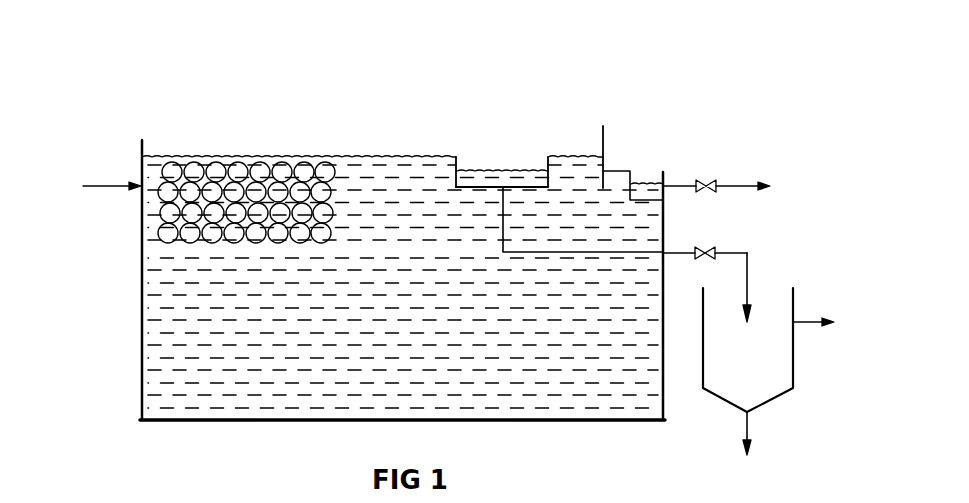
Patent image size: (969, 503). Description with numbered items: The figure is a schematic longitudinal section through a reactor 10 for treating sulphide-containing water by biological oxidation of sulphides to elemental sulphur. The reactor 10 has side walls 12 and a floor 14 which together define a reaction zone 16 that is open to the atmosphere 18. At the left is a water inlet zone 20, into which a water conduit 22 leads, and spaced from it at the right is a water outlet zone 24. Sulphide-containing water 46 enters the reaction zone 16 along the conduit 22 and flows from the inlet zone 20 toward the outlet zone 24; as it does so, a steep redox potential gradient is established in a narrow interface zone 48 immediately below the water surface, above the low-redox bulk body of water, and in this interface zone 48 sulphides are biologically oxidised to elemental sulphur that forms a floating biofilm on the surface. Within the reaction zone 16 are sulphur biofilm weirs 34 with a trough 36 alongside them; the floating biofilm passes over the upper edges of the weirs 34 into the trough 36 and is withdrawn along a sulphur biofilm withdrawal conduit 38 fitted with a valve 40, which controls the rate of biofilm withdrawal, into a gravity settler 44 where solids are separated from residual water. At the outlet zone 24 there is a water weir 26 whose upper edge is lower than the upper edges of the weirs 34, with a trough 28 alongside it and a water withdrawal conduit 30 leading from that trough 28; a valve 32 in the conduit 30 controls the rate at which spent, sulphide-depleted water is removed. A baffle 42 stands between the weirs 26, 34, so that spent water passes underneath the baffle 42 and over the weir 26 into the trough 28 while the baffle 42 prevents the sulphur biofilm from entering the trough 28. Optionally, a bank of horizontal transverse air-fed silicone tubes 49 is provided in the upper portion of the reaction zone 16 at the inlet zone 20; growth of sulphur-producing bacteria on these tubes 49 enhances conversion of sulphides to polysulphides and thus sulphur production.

The reactor 10 is at (744, 82).
The side walls 12 is at (142, 347).
The floor 14 is at (537, 420).
The reaction zone 16 is at (362, 315).
The atmosphere 18 is at (371, 161).
The water inlet zone 20 is at (217, 125).
The water conduit 22 is at (105, 186).
The water outlet zone 24 is at (631, 147).
The water weir 26 is at (629, 184).
The trough 28 is at (659, 194).
The water withdrawal conduit 30 is at (723, 161).
The valve 32 is at (700, 180).
The sulphur biofilm weirs 34 is at (457, 162).
The trough 36 is at (492, 151).
The sulphur biofilm withdrawal conduit 38 is at (574, 254).
The valve 40 is at (712, 247).
The baffle 42 is at (605, 127).
The gravity settler 44 is at (793, 368).
The sulphide-containing water 46 is at (273, 378).
The interface zone 48 is at (374, 170).
The air-fed silicone tubes 49 is at (183, 157).